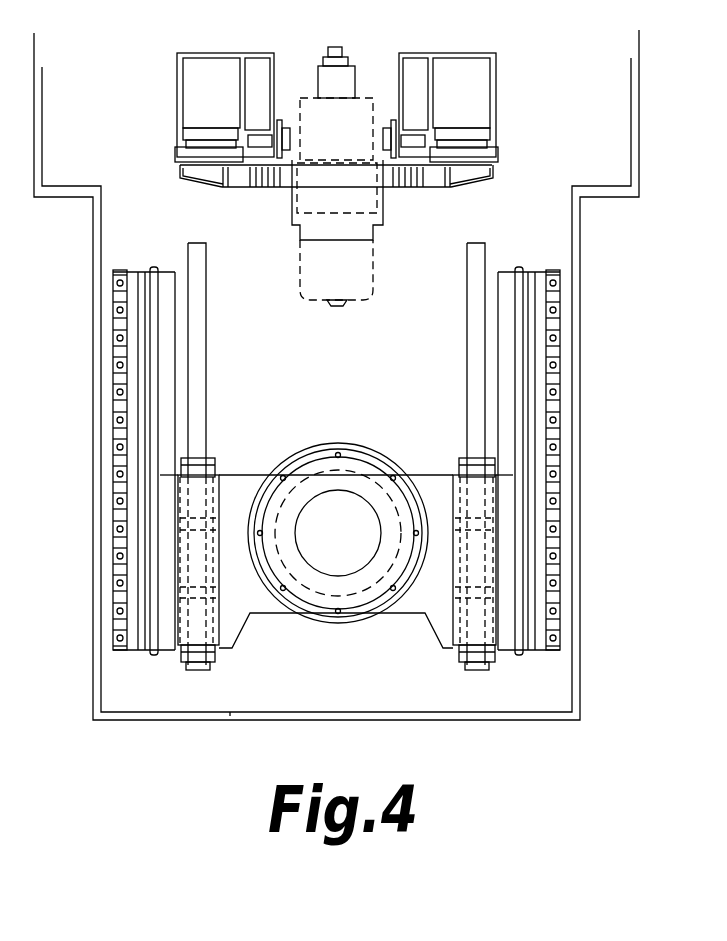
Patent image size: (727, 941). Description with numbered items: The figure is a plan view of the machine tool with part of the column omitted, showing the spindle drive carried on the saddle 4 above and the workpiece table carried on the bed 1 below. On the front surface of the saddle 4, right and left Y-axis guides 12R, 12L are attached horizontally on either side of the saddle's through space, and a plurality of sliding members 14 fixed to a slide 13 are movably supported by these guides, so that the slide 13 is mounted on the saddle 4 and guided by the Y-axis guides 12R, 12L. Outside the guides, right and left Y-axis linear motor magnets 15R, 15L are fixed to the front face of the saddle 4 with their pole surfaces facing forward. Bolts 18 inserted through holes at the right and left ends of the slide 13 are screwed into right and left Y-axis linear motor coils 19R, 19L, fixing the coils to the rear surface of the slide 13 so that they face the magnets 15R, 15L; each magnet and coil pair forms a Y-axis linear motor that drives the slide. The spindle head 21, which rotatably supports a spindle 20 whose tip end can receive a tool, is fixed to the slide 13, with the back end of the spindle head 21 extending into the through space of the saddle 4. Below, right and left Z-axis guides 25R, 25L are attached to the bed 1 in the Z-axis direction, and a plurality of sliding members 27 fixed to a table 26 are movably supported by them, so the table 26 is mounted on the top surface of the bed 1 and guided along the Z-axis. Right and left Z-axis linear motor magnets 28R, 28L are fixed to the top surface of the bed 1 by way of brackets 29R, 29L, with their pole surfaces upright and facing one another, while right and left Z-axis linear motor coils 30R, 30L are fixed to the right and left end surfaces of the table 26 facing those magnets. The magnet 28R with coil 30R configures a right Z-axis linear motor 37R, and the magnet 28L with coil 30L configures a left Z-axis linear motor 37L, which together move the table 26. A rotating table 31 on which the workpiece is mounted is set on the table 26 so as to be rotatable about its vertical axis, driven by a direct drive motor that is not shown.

The bed 1 is at (495, 712).
The saddle 4 is at (496, 63).
The left Y-axis guide 12L is at (263, 138).
The right Y-axis guide 12R is at (410, 138).
The slide 13 is at (190, 183).
The sliding member 14 is at (262, 137).
The left Y-axis linear motor magnet 15L is at (205, 143).
The right Y-axis linear motor magnet 15R is at (490, 130).
The bolt 18 is at (222, 183).
The left Y-axis linear motor coil 19L is at (178, 155).
The right Y-axis linear motor coil 19R is at (498, 152).
The spindle 20 is at (340, 307).
The spindle head 21 is at (308, 260).
The left Z-axis guide 25L is at (205, 357).
The right Z-axis guide 25R is at (472, 291).
The table 26 is at (428, 600).
The sliding member 27 is at (213, 465).
The left Z-axis linear motor magnet 28L is at (155, 346).
The right Z-axis linear motor magnet 28R is at (520, 323).
The left bracket 29L is at (145, 302).
The right bracket 29R is at (528, 287).
The left Z-axis linear motor coil 30L is at (165, 510).
The right Z-axis linear motor coil 30R is at (510, 540).
The rotating table 31 is at (338, 565).
The left Z-axis linear motor 37L is at (150, 585).
The right Z-axis linear motor 37R is at (523, 586).